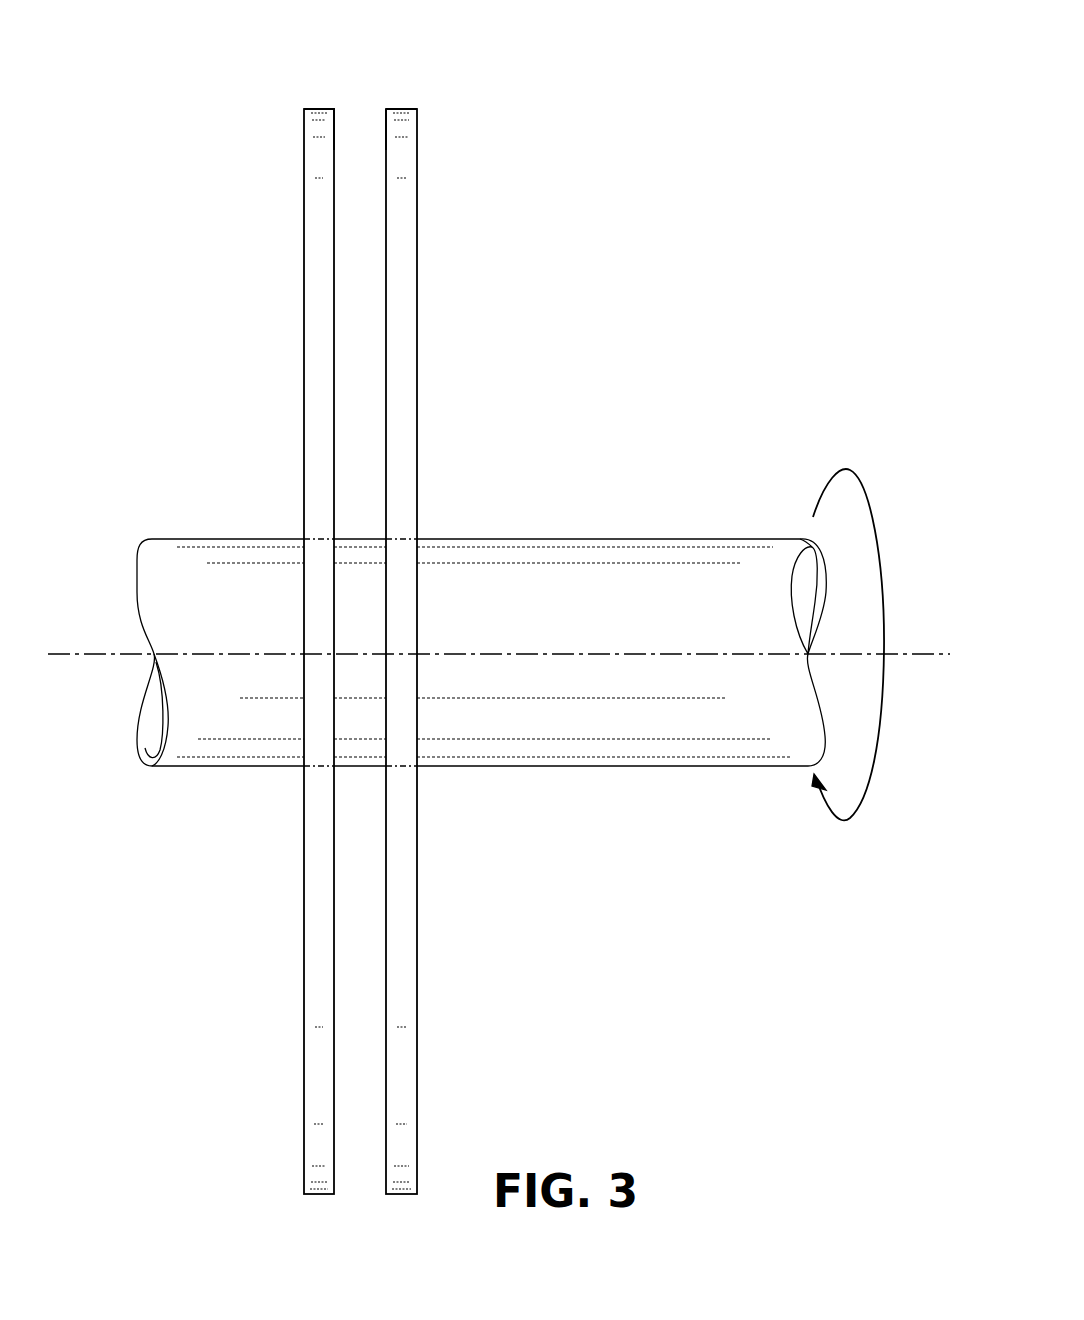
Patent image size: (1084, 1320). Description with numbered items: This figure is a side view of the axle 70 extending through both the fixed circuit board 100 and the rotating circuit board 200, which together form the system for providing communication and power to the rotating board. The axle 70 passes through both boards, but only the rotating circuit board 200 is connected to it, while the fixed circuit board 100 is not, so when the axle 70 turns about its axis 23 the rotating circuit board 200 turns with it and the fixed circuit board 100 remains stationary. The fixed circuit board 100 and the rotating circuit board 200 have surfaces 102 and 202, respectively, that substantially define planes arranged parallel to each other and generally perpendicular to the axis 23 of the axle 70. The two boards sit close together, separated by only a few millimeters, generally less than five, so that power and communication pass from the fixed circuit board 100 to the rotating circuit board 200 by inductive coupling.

The axis 23 is at (96, 654).
The axle 70 is at (259, 725).
The fixed circuit board 100 is at (417, 213).
The surface 102 is at (386, 137).
The rotating circuit board 200 is at (304, 224).
The surface 202 is at (334, 137).